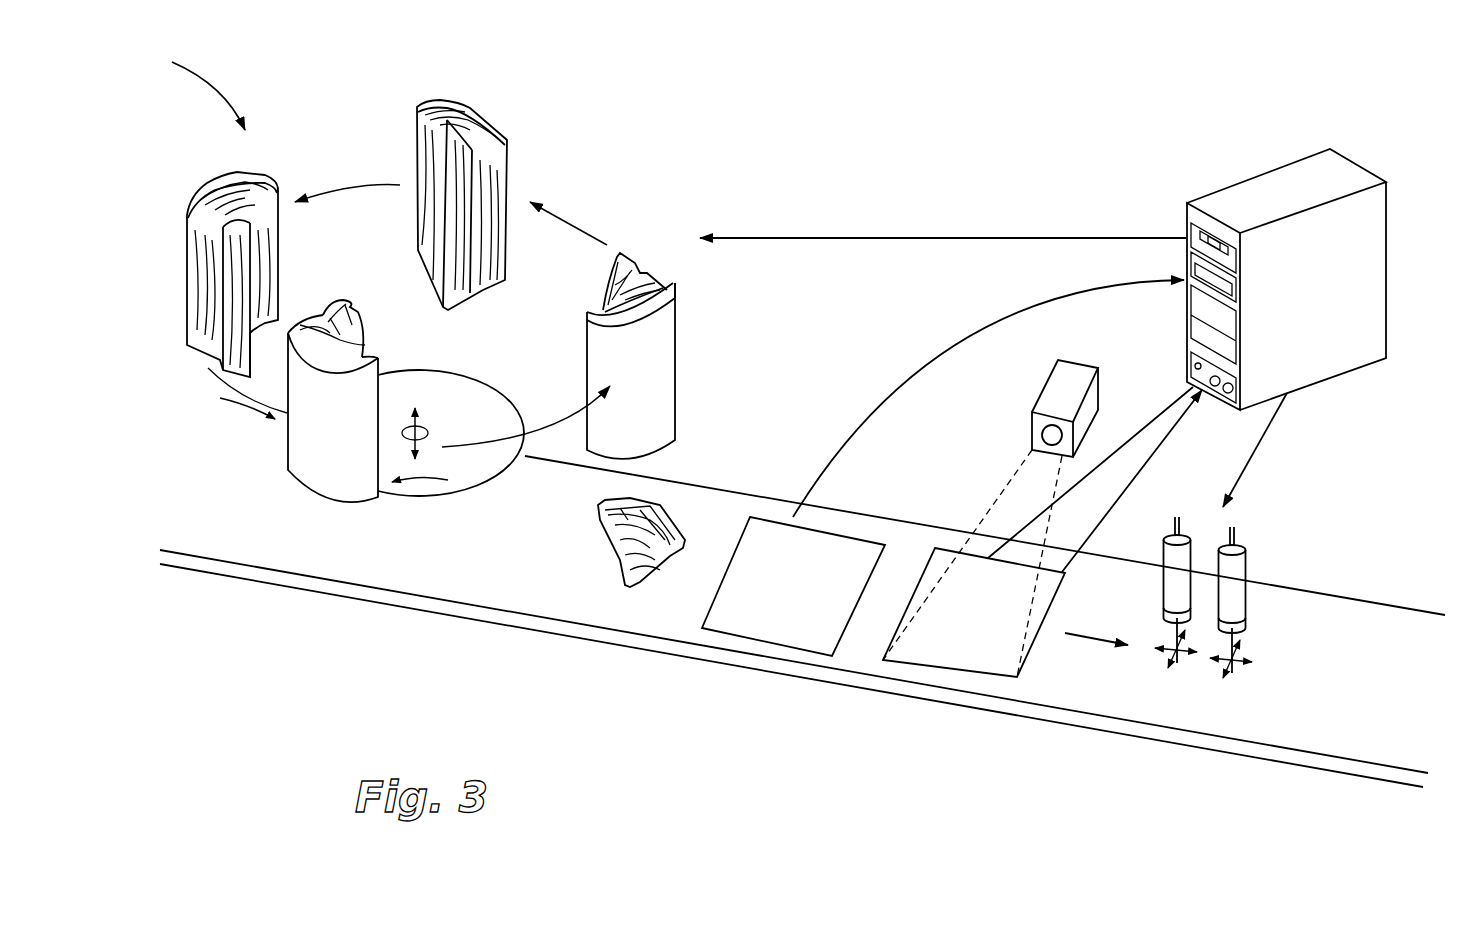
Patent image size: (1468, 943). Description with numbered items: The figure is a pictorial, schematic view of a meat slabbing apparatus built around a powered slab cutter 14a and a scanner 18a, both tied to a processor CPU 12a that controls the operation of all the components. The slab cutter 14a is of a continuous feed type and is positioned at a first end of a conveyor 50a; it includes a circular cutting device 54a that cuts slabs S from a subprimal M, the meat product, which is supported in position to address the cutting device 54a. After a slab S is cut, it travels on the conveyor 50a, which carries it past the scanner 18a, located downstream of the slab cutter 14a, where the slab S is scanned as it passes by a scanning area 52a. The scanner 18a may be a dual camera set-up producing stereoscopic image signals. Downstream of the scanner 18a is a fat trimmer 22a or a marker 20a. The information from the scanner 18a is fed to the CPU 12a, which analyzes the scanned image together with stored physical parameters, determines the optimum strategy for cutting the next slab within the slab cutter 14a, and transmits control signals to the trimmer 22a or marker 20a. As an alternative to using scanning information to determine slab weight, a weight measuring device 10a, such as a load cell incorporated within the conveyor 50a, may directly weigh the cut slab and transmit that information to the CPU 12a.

The weight measuring device 10a is at (762, 613).
The processor CPU 12a is at (1352, 332).
The slab cutter 14a is at (212, 383).
The scanner 18a is at (1037, 422).
The marker 20a is at (1268, 565).
The fat trimmer 22a is at (1231, 602).
The conveyor 50a is at (457, 578).
The scanning area 52a is at (960, 657).
The cutting device 54a is at (415, 488).
The subprimal M is at (507, 128).
The slab S is at (620, 552).